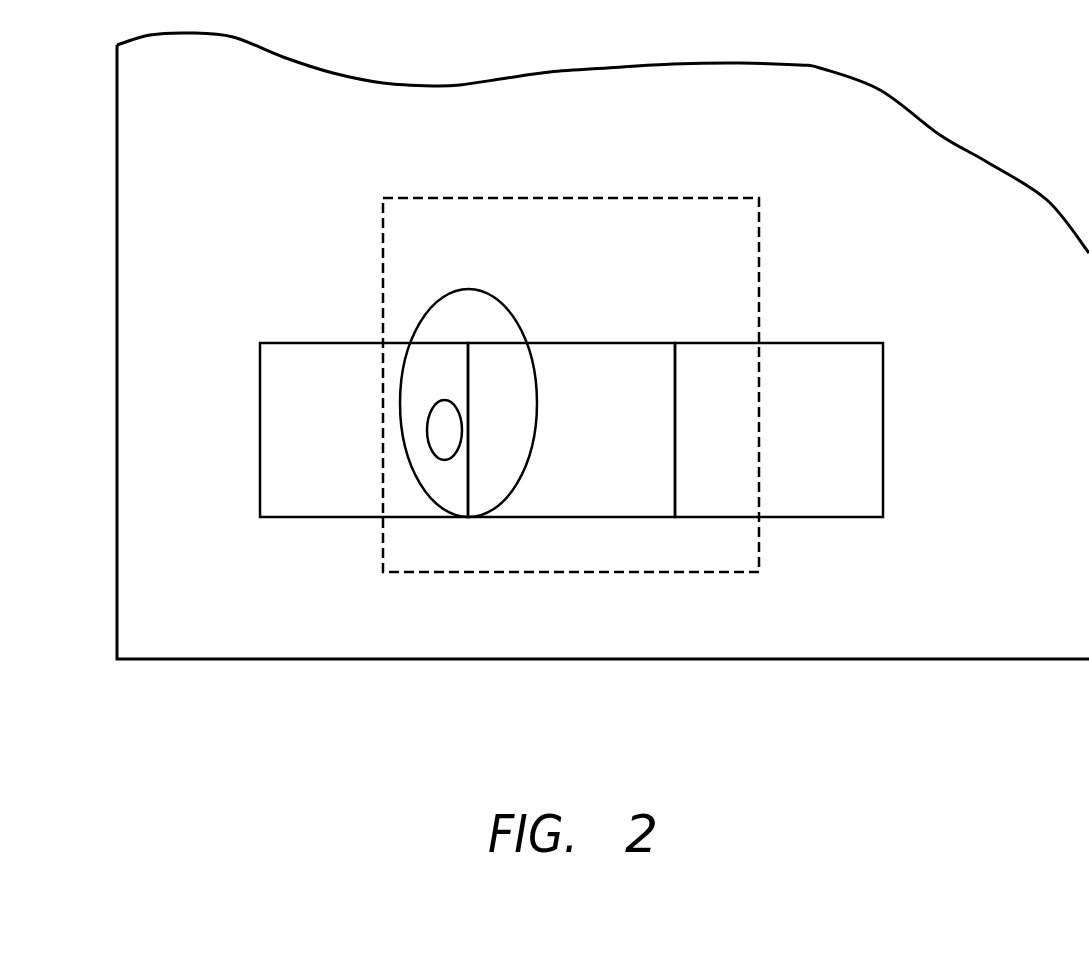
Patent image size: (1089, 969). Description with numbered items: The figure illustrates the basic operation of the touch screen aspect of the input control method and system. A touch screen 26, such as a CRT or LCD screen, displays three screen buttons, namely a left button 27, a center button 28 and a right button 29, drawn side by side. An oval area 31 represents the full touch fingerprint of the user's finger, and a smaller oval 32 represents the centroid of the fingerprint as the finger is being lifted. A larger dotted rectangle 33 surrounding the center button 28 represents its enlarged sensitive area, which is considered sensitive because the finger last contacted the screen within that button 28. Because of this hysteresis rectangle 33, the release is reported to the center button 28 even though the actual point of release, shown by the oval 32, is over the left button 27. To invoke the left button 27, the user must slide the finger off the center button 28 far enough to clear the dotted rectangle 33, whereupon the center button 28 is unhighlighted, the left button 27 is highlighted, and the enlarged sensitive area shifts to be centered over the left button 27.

The touch screen 26 is at (987, 162).
The left screen button 27 is at (328, 517).
The center screen button 28 is at (578, 516).
The right screen button 29 is at (840, 516).
The full touch fingerprint 31 is at (502, 305).
The fingerprint centroid 32 is at (443, 400).
The hysteresis rectangle 33 is at (658, 198).